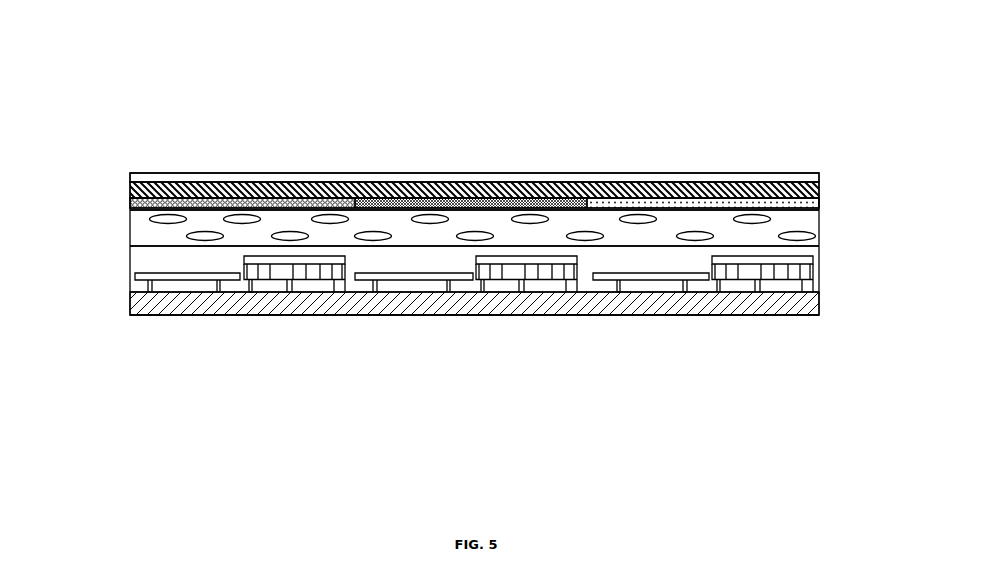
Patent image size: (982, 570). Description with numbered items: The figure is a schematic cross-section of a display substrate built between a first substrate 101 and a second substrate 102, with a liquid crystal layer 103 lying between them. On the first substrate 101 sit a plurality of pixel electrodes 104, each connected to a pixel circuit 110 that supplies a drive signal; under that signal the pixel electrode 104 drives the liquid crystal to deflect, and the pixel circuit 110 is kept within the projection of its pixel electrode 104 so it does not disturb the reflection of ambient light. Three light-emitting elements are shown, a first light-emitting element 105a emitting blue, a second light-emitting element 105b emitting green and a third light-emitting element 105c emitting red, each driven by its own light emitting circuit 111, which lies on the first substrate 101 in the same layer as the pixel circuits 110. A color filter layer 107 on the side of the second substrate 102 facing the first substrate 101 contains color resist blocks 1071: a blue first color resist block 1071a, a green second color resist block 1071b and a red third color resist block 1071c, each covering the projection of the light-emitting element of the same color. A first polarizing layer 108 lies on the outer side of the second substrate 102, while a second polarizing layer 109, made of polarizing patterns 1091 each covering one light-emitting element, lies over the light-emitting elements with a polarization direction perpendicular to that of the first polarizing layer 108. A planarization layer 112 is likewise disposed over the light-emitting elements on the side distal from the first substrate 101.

The first substrate 101 is at (820, 307).
The second substrate 102 is at (820, 187).
The liquid crystal layer 103 is at (820, 227).
The pixel electrode 104 is at (651, 312).
The first light-emitting element 105a is at (302, 312).
The second light-emitting element 105b is at (574, 282).
The third light-emitting element 105c is at (808, 282).
The color filter layer 107 is at (676, 63).
The color resist block 1071 is at (272, 110).
The first color resist block 1071a is at (272, 198).
The second color resist block 1071b is at (482, 198).
The third color resist block 1071c is at (676, 198).
The first polarizing layer 108 is at (746, 173).
The second polarizing layer 109 is at (287, 432).
The polarizing pattern 1091 is at (282, 258).
The pixel circuit 110 is at (635, 287).
The light emitting circuit 111 is at (258, 287).
The planarization layer 112 is at (147, 262).